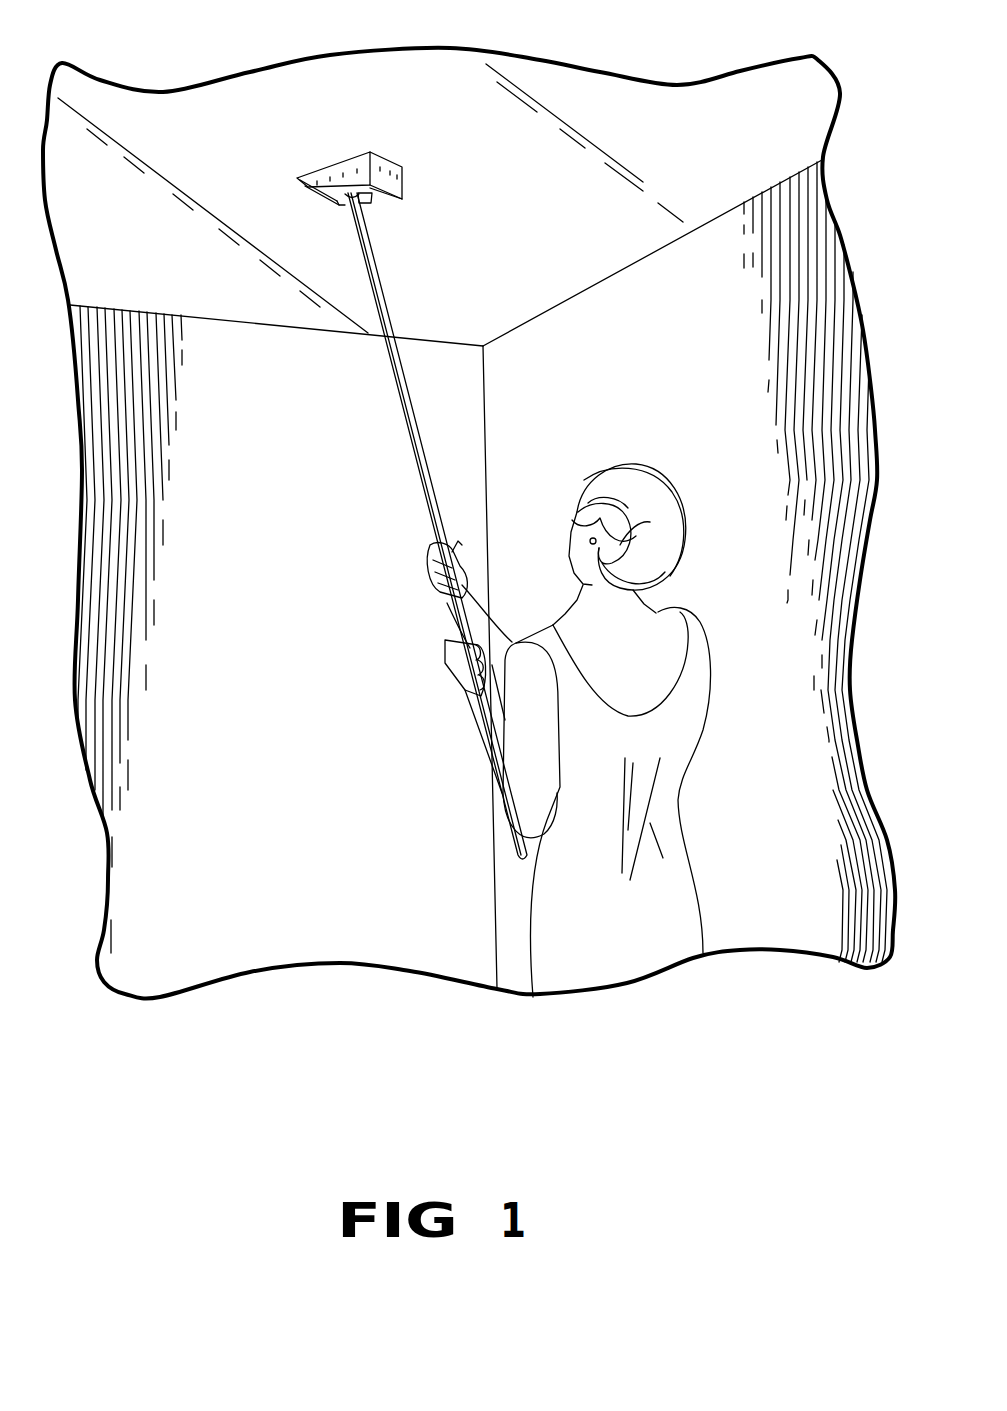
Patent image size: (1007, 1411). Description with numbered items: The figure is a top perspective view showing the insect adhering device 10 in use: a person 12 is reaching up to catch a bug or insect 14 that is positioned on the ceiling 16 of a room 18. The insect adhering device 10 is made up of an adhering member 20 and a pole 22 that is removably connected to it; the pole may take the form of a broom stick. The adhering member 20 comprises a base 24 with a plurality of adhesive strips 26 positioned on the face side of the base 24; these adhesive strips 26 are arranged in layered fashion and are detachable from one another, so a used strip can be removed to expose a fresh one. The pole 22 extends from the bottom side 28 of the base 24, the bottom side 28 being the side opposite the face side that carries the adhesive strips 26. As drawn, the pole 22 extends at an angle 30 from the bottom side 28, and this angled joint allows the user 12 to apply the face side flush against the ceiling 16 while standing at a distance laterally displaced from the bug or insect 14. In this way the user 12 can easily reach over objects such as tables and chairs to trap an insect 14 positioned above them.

The insect adhering device 10 is at (405, 469).
The person 12 is at (653, 637).
The bug or insect 14 is at (356, 185).
The ceiling 16 is at (215, 117).
The room 18 is at (688, 146).
The adhering member 20 is at (338, 215).
The pole 22 is at (408, 387).
The base 24 is at (308, 187).
The adhesive strips 26 is at (380, 162).
The bottom side 28 is at (376, 200).
The angle 30 is at (367, 205).